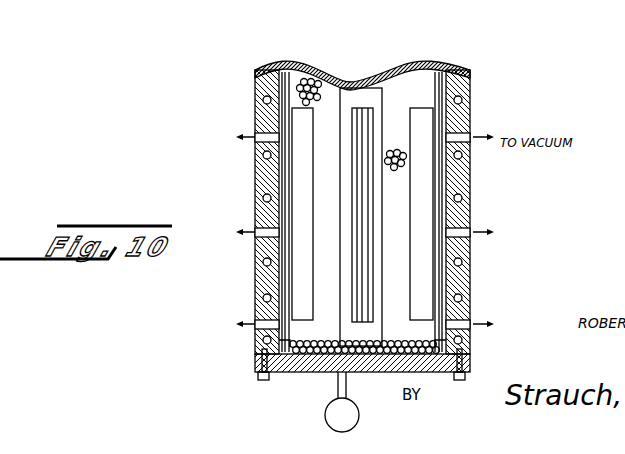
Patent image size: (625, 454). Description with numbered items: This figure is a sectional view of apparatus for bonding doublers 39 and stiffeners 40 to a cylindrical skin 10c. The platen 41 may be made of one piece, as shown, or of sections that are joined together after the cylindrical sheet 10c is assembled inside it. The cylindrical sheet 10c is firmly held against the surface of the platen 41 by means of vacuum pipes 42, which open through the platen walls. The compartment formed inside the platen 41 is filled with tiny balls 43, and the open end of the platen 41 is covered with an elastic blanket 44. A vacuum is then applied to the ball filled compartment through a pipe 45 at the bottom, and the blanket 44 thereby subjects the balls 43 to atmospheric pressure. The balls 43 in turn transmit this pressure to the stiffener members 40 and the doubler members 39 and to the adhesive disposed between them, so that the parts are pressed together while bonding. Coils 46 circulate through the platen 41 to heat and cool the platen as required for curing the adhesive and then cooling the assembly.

The cylindrical skin 10c is at (287, 72).
The doubler 39 is at (367, 97).
The stiffener 40 is at (368, 130).
The platen 41 is at (470, 98).
The vacuum pipe 42 is at (470, 240).
The tiny balls 43 is at (305, 82).
The elastic blanket 44 is at (387, 78).
The vacuum pipe 45 is at (340, 386).
The coil 46 is at (266, 97).